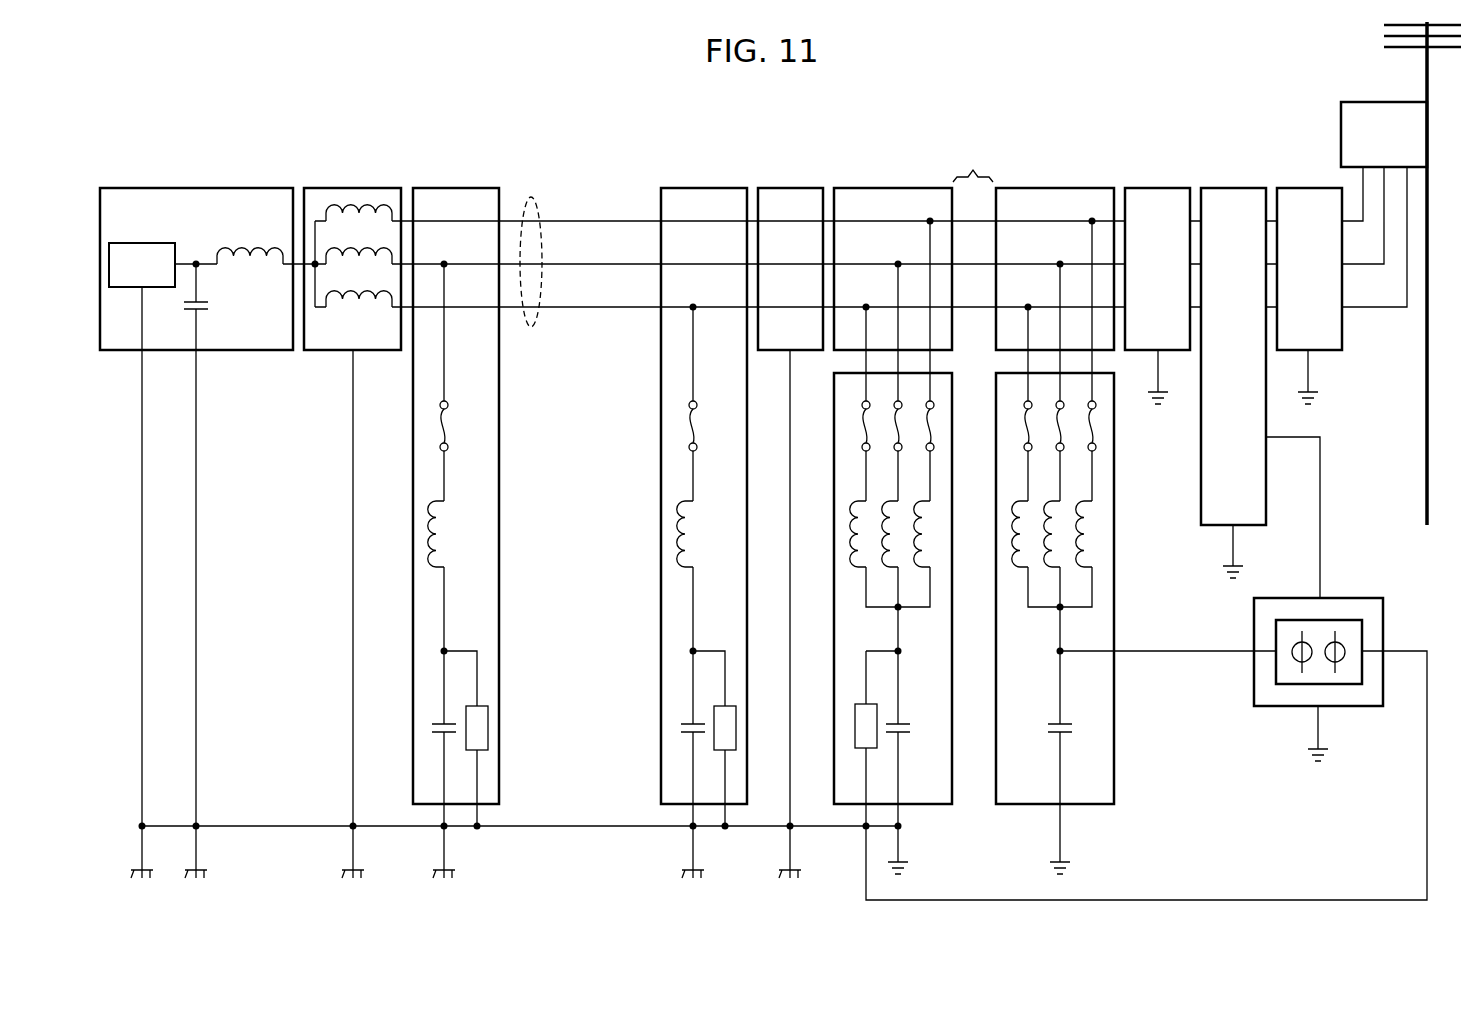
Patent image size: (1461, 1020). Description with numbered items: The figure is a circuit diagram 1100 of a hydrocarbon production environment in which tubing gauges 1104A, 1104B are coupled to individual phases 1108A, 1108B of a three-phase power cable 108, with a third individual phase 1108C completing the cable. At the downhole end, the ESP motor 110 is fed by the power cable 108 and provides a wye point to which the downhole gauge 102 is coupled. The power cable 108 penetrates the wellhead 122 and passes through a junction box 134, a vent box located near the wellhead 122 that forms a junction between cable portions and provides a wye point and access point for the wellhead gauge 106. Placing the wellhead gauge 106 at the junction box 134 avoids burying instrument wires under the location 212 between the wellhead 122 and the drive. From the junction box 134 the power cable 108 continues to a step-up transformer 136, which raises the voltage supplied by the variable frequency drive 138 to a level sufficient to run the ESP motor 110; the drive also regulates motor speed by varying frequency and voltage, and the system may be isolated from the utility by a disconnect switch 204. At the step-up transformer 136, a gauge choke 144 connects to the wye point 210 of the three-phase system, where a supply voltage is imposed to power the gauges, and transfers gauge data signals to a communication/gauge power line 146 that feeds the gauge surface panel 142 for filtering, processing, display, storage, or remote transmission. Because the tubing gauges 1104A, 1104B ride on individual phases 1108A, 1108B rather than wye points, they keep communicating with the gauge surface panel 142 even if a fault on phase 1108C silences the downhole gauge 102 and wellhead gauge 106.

The circuit diagram 1100 is at (238, 100).
The downhole gauge 102 is at (185, 185).
The ESP motor 110 is at (342, 185).
The tubing gauge 1104A is at (455, 185).
The tubing gauge 1104B is at (703, 185).
The power cable 108 is at (527, 192).
The individual phase 1108A is at (633, 267).
The individual phase 1108B is at (573, 309).
The individual phase 1108C is at (607, 219).
The wellhead 122 is at (792, 186).
The junction box 134 is at (893, 185).
The step-up transformer 136 is at (1055, 185).
The location 212 is at (975, 162).
The variable frequency drive 138 is at (1233, 186).
The disconnect switch 204 is at (1343, 328).
The wellhead gauge 106 is at (920, 806).
The gauge choke 144 is at (1090, 806).
The wye point 210 is at (1053, 618).
The communication/gauge power line 146 is at (1170, 654).
The gauge surface panel 142 is at (1360, 708).